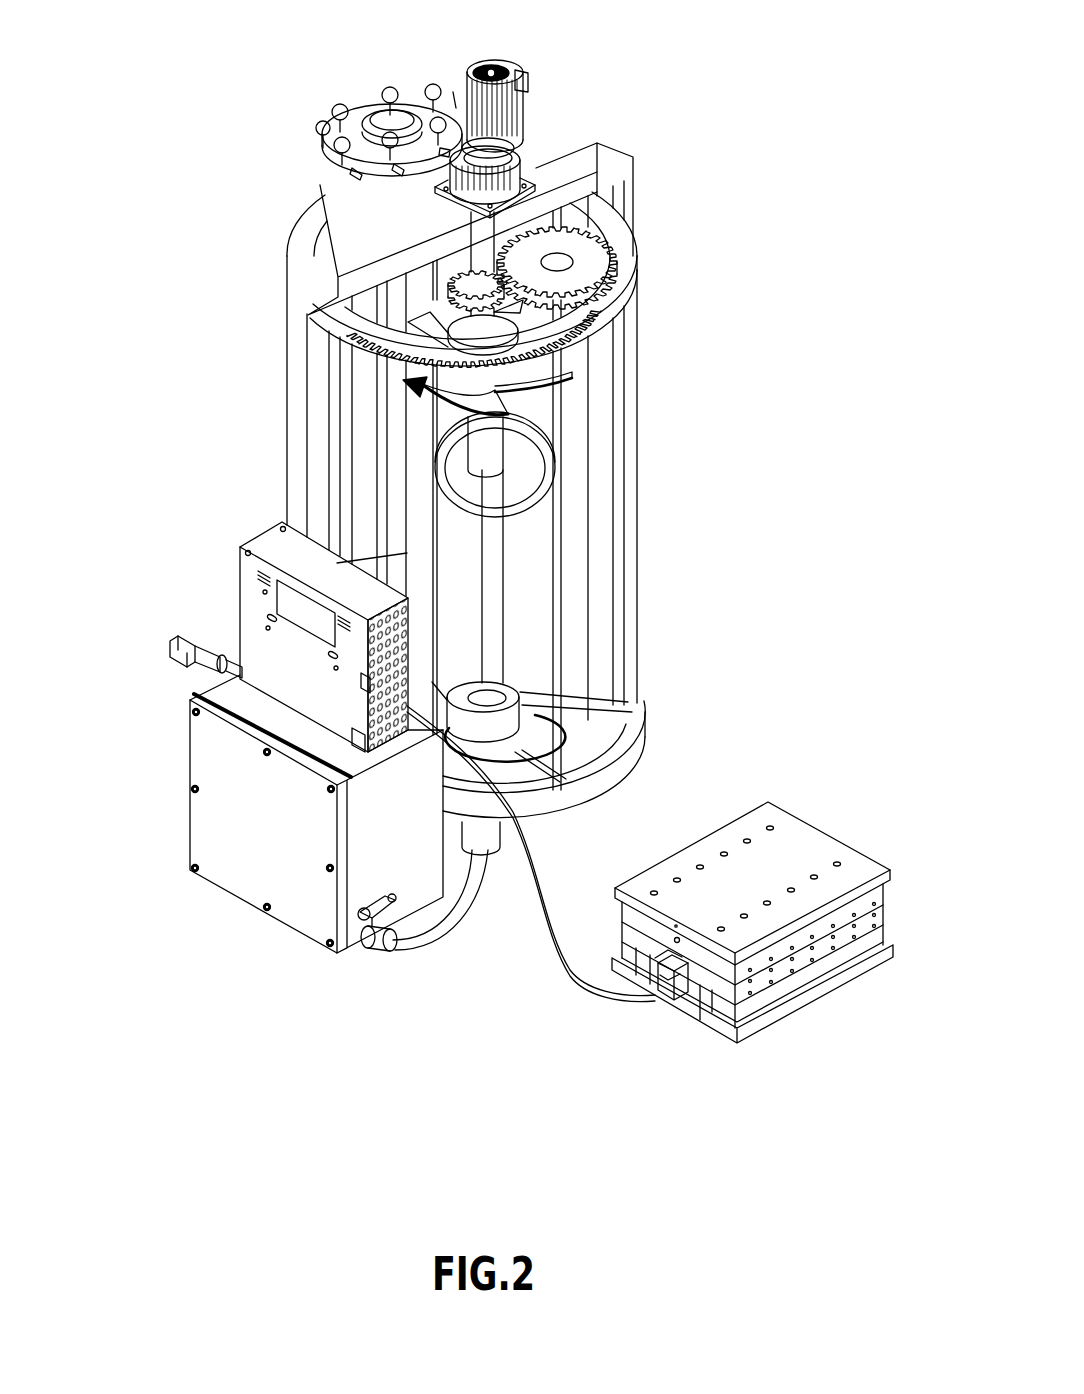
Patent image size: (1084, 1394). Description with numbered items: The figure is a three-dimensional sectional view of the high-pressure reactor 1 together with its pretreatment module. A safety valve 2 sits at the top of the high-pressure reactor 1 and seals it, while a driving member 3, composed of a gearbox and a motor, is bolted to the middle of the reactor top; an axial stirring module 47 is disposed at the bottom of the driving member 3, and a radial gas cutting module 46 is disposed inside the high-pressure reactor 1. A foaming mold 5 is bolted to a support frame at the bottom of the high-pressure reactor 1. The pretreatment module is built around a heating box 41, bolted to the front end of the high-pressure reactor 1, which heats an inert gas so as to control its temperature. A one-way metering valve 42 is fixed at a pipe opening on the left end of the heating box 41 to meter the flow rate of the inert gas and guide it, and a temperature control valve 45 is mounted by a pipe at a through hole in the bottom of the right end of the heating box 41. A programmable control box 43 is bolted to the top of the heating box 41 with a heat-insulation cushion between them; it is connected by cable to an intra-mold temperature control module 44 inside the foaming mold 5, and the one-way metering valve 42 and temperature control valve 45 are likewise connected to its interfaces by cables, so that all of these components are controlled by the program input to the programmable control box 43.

The high-pressure reactor 1 is at (287, 307).
The safety valve 2 is at (368, 108).
The driving member 3 is at (528, 97).
The foaming mold 5 is at (827, 852).
The heating box 41 is at (208, 777).
The one-way metering valve 42 is at (170, 641).
The programmable control box 43 is at (247, 610).
The intra-mold temperature control module 44 is at (640, 987).
The temperature control valve 45 is at (368, 948).
The radial gas cutting module 46 is at (623, 720).
The axial stirring module 47 is at (610, 248).